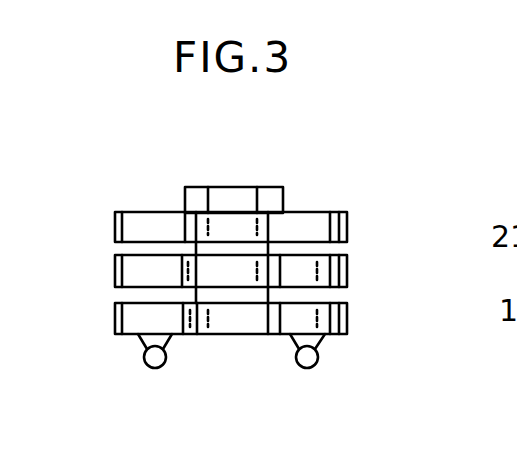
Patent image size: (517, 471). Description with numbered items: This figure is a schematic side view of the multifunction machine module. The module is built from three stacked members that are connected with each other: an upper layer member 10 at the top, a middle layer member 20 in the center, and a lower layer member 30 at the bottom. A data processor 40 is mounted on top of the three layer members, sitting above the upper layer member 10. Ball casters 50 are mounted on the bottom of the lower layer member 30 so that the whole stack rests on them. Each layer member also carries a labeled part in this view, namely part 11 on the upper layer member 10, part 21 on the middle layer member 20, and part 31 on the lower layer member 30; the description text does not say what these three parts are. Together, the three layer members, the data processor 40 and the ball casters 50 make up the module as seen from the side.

The upper layer member 10 is at (356, 223).
The first circuit board 11 is at (115, 232).
The middle layer member 20 is at (359, 274).
The second circuit board 21 is at (192, 272).
The lower layer member 30 is at (360, 323).
The third circuit board 31 is at (112, 316).
The data processor 40 is at (233, 186).
The ball casters 50 is at (317, 362).